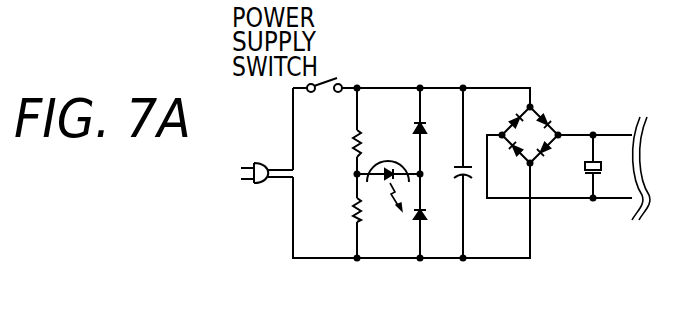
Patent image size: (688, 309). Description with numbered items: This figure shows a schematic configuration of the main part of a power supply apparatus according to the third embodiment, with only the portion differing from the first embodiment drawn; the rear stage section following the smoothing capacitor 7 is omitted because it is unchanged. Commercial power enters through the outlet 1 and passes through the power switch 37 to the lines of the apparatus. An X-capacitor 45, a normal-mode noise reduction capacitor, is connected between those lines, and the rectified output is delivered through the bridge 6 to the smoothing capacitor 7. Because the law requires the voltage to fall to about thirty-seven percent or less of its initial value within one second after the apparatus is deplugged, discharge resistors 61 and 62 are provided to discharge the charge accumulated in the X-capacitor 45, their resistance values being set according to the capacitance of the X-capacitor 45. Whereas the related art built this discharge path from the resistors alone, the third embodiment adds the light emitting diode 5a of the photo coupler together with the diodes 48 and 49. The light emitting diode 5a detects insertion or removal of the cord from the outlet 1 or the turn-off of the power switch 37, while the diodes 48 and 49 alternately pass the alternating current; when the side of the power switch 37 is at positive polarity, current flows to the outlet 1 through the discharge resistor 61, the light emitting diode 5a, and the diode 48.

The outlet 1 is at (258, 163).
The power switch 37 is at (336, 78).
The discharge resistor 61 is at (352, 146).
The discharge resistor 62 is at (349, 213).
The light emitting diode of the photo coupler 5a is at (392, 160).
The diode 48 is at (416, 212).
The diode 49 is at (425, 128).
The X-capacitor 45 is at (455, 177).
The rectifier bridge 6 is at (545, 120).
The smoothing capacitor 7 is at (586, 168).